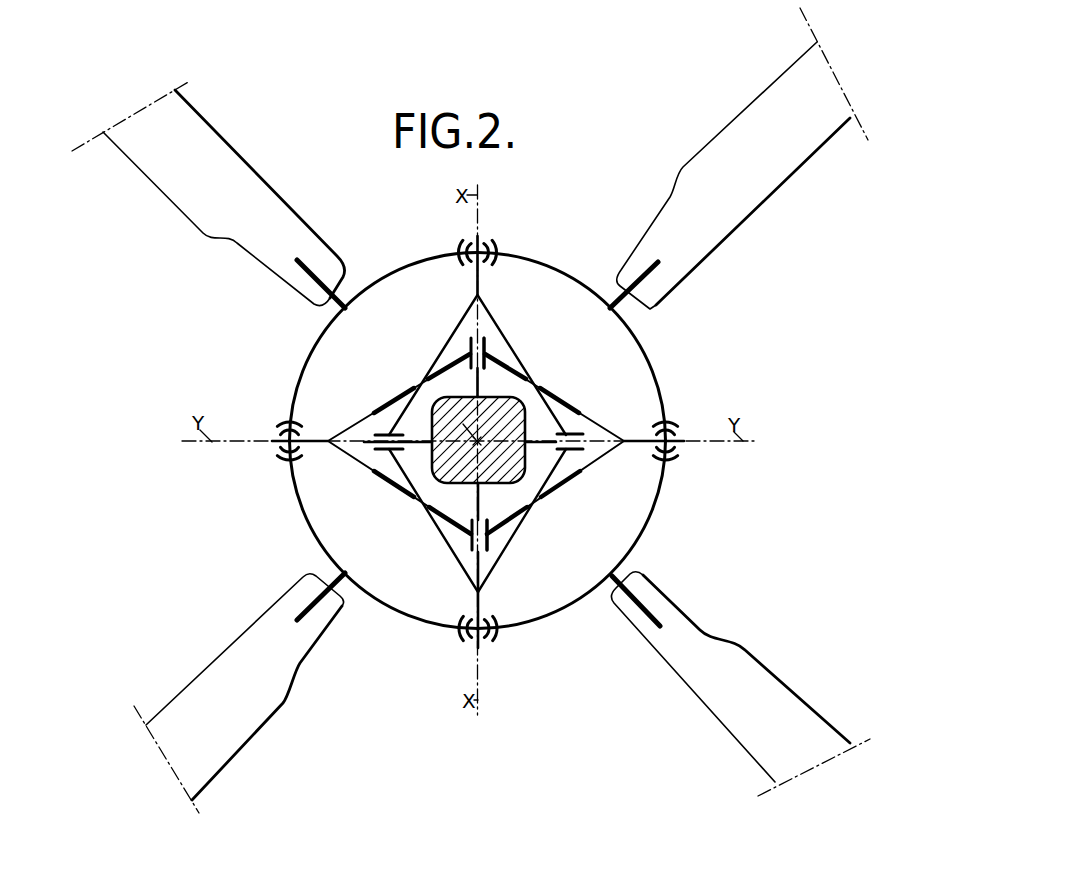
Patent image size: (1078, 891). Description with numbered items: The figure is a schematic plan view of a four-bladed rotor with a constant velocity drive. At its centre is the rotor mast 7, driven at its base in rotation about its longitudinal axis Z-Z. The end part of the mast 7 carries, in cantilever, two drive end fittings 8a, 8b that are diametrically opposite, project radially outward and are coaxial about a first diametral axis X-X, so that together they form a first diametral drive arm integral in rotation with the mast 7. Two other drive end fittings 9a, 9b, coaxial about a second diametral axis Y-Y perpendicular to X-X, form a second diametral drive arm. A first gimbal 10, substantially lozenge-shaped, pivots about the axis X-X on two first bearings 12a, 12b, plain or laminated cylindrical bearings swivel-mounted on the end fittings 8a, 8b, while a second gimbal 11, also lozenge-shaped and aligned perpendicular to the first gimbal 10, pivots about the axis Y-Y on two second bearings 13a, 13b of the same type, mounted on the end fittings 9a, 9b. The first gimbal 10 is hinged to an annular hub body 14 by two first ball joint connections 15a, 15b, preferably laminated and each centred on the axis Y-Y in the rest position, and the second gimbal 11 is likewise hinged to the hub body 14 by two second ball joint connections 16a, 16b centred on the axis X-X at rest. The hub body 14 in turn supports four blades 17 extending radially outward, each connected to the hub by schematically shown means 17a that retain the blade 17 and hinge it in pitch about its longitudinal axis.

The rotor mast 7 is at (503, 455).
The drive end fitting 8a is at (481, 336).
The drive end fitting 8b is at (490, 537).
The drive end fitting 9a is at (374, 435).
The drive end fitting 9b is at (585, 447).
The first gimbal 10 is at (395, 402).
The second gimbal 11 is at (497, 565).
The first bearing 12a is at (469, 349).
The first bearing 12b is at (472, 537).
The second bearing 13a is at (383, 450).
The second bearing 13b is at (574, 433).
The hub body 14 is at (309, 344).
The first ball joint connection 15a is at (280, 455).
The first ball joint connection 15b is at (677, 453).
The second ball joint connection 16a is at (492, 242).
The second ball joint connection 16b is at (497, 638).
The blade 17 is at (195, 155).
The blade retaining and pitch hinge means 17a is at (312, 267).